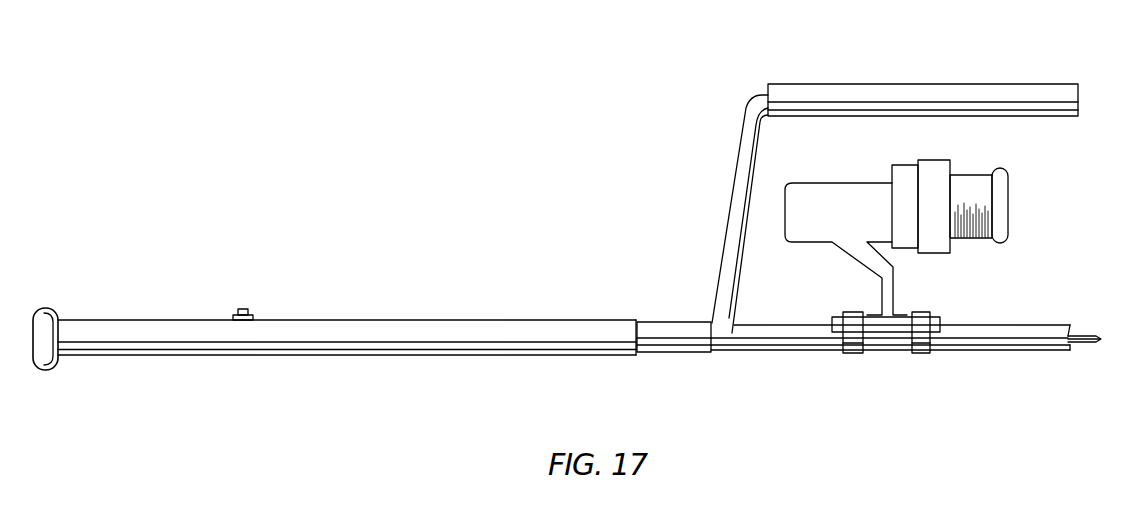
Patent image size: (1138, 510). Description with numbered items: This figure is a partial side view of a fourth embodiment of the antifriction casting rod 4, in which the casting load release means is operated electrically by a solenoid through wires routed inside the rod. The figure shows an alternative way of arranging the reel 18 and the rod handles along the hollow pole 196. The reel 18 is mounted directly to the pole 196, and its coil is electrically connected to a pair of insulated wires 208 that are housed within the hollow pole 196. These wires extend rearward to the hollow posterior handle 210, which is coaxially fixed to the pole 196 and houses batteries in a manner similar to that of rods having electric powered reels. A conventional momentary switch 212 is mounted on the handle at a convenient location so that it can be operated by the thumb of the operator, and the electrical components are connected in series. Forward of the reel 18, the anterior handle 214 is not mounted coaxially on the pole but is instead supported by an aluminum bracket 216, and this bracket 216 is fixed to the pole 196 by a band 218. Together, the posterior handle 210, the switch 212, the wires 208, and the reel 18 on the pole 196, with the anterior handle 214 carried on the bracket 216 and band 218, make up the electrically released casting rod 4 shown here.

The antifriction casting rod 4 is at (588, 105).
The reel 18 is at (822, 183).
The hollow pole 196 is at (985, 352).
The insulated wires 208 is at (1085, 333).
The posterior handle 210 is at (384, 357).
The momentary switch 212 is at (251, 308).
The anterior handle 214 is at (958, 83).
The aluminum bracket 216 is at (738, 155).
The band 218 is at (665, 321).